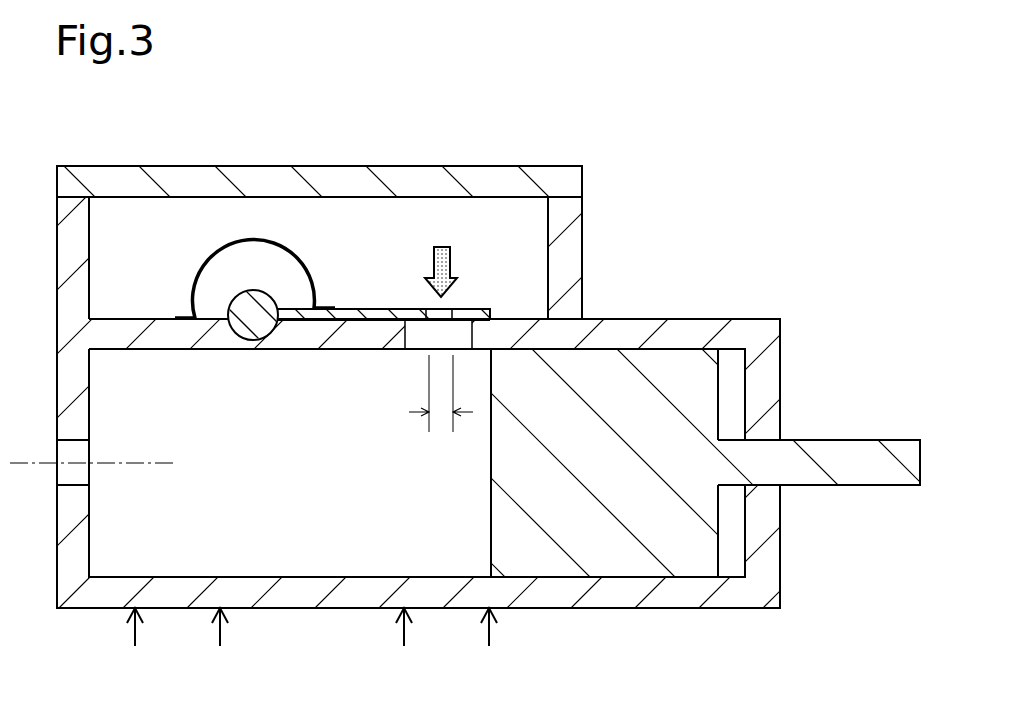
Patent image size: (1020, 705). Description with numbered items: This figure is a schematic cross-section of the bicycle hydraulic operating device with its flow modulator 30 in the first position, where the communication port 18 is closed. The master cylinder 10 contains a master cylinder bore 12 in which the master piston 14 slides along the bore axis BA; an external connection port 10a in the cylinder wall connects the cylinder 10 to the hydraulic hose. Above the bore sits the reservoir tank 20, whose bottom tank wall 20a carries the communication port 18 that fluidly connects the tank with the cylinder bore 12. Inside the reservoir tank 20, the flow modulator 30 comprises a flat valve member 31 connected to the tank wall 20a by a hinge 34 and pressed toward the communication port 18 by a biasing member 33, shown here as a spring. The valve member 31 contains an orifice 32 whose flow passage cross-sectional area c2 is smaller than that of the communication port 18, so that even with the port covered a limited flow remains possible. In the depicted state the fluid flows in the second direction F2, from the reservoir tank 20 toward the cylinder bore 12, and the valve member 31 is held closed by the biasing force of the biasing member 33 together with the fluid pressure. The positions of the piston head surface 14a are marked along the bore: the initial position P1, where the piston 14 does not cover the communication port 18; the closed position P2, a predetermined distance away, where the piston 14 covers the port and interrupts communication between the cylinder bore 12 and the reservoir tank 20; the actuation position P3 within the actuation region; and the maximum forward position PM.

The master cylinder 10 is at (684, 328).
The external connection port 10a is at (70, 484).
The master cylinder bore 12 is at (337, 350).
The master piston 14 is at (634, 566).
The piston head surface 14a is at (489, 527).
The communication port 18 is at (407, 340).
The reservoir tank 20 is at (570, 253).
The tank wall 20a is at (126, 317).
The flow modulator 30 is at (332, 216).
The valve member 31 is at (398, 309).
The orifice 32 is at (436, 309).
The biasing member 33 is at (297, 262).
The hinge 34 is at (252, 234).
The bore axis BA is at (40, 462).
The second direction F2 is at (450, 262).
The flow passage cross-sectional area of the orifice c2 is at (441, 414).
The maximum forward position PM is at (136, 643).
The initial position P1 is at (489, 643).
The closed position P2 is at (405, 643).
The actuation position P3 is at (221, 643).